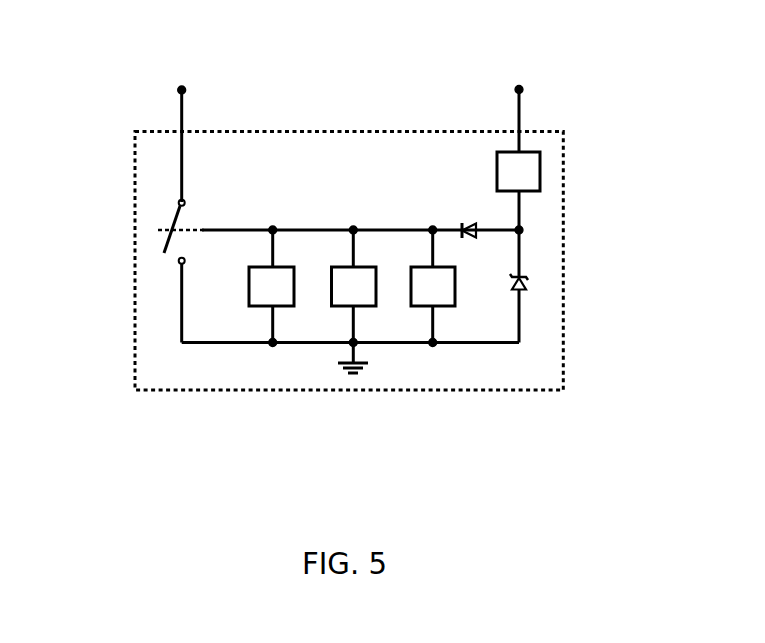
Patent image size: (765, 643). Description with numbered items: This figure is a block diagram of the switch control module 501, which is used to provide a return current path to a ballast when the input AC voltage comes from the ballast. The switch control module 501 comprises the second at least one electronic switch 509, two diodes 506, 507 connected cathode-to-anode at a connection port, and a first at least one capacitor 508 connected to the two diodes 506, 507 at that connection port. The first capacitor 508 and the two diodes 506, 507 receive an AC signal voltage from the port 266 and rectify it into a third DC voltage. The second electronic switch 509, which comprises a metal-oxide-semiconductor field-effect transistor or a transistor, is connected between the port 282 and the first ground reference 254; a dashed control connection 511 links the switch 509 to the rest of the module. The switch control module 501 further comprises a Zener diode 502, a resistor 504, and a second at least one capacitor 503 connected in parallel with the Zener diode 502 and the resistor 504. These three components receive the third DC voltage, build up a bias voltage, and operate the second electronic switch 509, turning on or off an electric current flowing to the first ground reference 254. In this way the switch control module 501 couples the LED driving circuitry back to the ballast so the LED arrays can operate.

The first ground reference 254 is at (355, 375).
The port 266 is at (520, 85).
The port 282 is at (182, 85).
The switch control module 501 is at (326, 122).
The Zener diode 502 is at (263, 307).
The second at least one capacitor 503 is at (337, 307).
The resistor 504 is at (447, 307).
The diode 506 is at (468, 223).
The diode 507 is at (527, 284).
The first at least one capacitor 508 is at (526, 150).
The second at least one electronic switch 509 is at (163, 226).
The switch connection line 511 is at (202, 227).